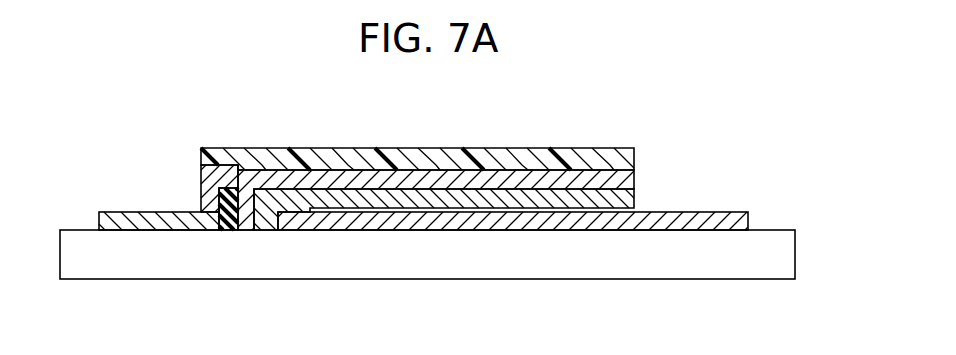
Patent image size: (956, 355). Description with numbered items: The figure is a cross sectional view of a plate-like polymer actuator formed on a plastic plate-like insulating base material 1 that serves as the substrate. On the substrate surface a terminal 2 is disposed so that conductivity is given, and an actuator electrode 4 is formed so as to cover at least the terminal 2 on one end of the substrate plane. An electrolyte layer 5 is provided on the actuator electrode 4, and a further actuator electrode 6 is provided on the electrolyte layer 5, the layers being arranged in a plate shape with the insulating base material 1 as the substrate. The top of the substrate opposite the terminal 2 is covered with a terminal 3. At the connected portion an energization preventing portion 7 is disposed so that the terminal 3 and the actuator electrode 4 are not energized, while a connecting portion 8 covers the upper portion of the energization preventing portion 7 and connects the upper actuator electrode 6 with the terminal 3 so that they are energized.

The insulating base material 1 is at (783, 257).
The terminal 2 is at (737, 215).
The terminal 3 is at (121, 216).
The actuator electrode 4 is at (632, 194).
The electrolyte layer 5 is at (626, 182).
The actuator electrode 6 is at (632, 150).
The energization preventing portion 7 is at (226, 218).
The connecting portion 8 is at (206, 198).